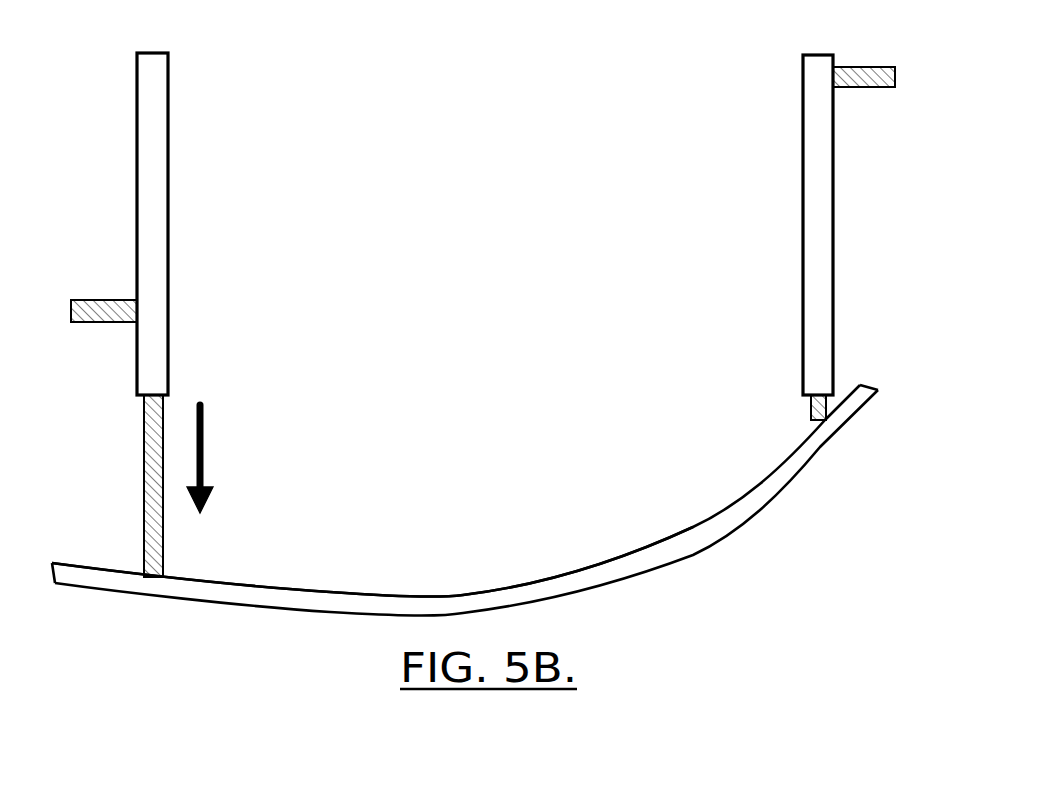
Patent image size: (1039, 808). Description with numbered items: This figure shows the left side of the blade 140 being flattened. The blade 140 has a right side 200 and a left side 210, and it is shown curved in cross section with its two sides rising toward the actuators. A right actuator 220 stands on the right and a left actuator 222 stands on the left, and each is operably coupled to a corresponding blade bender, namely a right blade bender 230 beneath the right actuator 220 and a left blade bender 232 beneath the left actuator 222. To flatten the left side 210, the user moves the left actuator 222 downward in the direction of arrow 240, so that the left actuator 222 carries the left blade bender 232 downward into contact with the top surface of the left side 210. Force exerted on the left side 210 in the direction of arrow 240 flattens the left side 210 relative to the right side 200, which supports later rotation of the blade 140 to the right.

The blade 140 is at (511, 549).
The right side 200 is at (465, 500).
The left side 210 is at (191, 616).
The right actuator 220 is at (867, 225).
The left actuator 222 is at (101, 224).
The right blade bender 230 is at (758, 429).
The left blade bender 232 is at (99, 486).
The arrow 240 is at (249, 459).